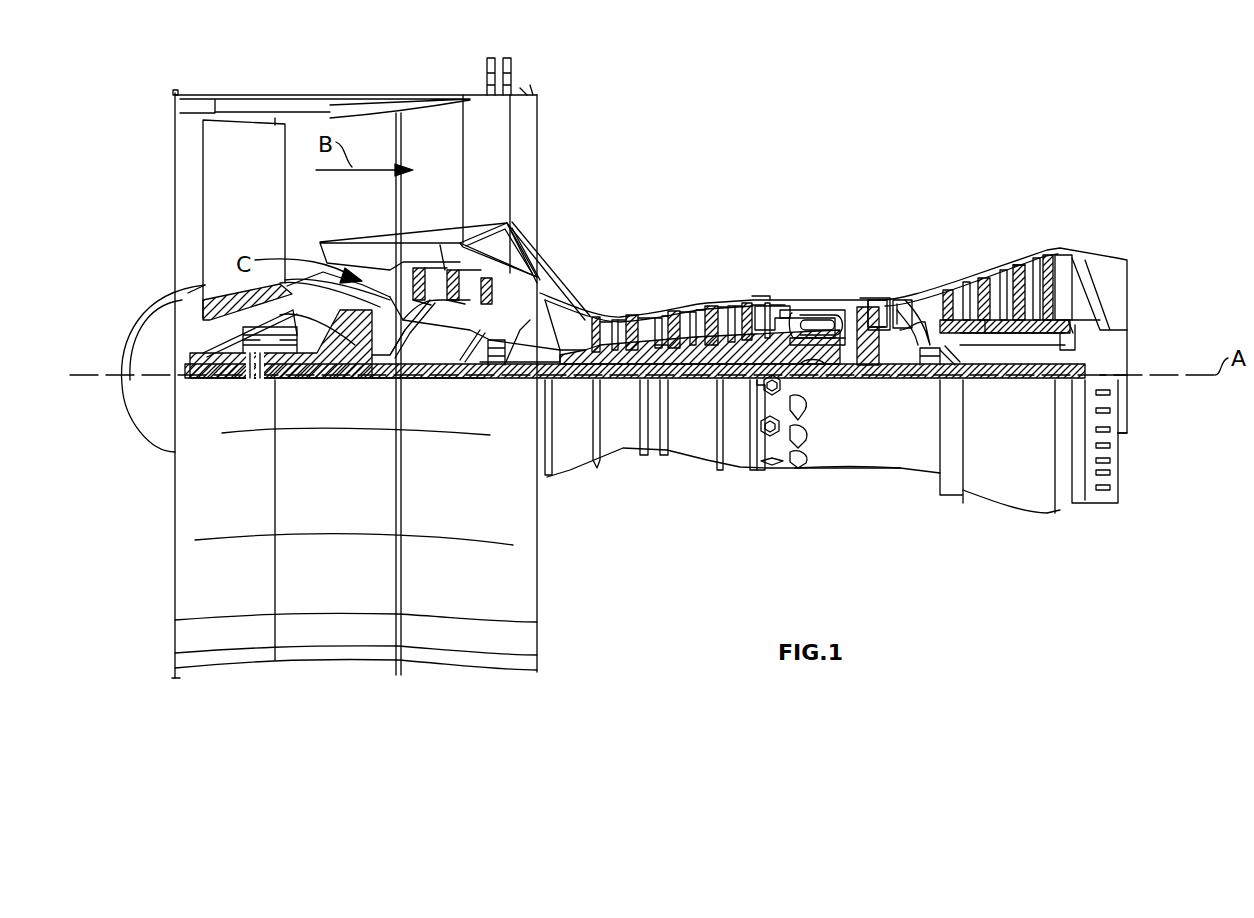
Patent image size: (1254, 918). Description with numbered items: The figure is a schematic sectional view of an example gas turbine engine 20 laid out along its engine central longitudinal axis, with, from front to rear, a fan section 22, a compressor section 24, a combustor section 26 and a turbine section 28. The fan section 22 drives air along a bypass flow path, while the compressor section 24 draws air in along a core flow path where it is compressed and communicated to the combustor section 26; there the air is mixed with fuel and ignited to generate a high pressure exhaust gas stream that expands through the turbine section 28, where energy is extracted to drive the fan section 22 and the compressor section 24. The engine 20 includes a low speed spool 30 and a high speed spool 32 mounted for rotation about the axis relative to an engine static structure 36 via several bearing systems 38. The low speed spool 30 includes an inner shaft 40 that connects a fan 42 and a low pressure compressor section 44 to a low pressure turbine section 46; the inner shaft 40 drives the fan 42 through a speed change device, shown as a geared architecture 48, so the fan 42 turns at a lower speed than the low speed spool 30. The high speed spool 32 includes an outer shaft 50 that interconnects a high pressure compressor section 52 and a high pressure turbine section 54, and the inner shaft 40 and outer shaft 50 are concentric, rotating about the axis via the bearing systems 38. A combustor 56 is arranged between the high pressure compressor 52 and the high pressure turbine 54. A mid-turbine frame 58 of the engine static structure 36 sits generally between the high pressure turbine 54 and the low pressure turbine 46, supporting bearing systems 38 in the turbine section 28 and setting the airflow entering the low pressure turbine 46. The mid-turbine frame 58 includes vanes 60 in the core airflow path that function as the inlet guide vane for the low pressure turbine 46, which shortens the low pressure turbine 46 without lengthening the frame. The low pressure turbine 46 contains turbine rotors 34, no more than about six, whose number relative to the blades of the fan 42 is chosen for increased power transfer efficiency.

The gas turbine engine 20 is at (815, 143).
The fan section 22 is at (384, 68).
The compressor section 24 is at (395, 212).
The combustor section 26 is at (848, 212).
The turbine section 28 is at (1072, 212).
The low speed spool 30 is at (695, 382).
The high speed spool 32 is at (724, 360).
The turbine rotors 34 is at (1000, 358).
The engine static structure 36 is at (736, 466).
The bearing systems 38 is at (248, 362).
The inner shaft 40 is at (568, 380).
The fan 42 is at (258, 222).
The low pressure compressor section 44 is at (495, 250).
The low pressure turbine section 46 is at (1005, 275).
The geared architecture 48 is at (356, 372).
The outer shaft 50 is at (812, 362).
The high pressure compressor section 52 is at (665, 345).
The high pressure turbine section 54 is at (878, 300).
The combustor 56 is at (810, 312).
The mid-turbine frame 58 is at (918, 292).
The vanes 60 is at (948, 360).